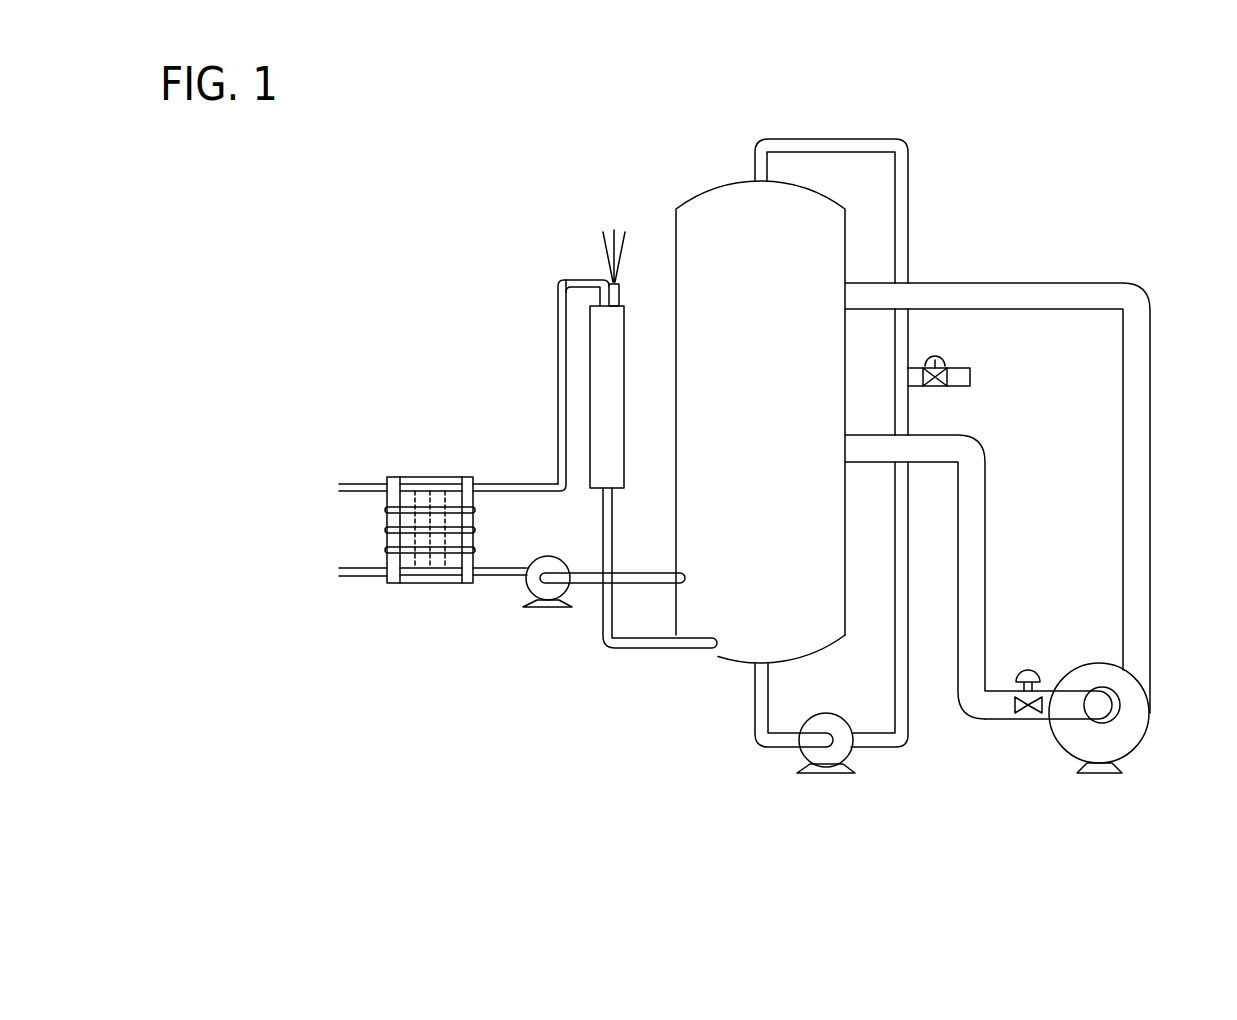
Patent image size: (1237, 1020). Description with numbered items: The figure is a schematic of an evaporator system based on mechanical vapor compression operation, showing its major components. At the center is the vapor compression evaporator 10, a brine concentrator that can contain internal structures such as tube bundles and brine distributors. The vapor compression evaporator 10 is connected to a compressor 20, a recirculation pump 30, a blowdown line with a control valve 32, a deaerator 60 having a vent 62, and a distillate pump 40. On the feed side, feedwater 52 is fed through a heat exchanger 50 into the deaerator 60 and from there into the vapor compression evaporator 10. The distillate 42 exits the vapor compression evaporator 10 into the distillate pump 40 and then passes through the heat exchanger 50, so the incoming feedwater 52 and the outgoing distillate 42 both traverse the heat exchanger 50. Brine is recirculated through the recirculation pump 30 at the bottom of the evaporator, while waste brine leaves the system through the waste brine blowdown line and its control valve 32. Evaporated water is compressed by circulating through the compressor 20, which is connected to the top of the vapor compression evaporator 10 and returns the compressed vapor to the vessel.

The vapor compression evaporator 10 is at (715, 185).
The compressor 20 is at (1143, 737).
The recirculation pump 30 is at (830, 774).
The control valve 32 is at (982, 377).
The distillate pump 40 is at (557, 554).
The distillate 42 is at (328, 572).
The heat exchanger 50 is at (430, 475).
The feedwater 52 is at (328, 488).
The deaerator 60 is at (590, 417).
The vent 62 is at (609, 230).